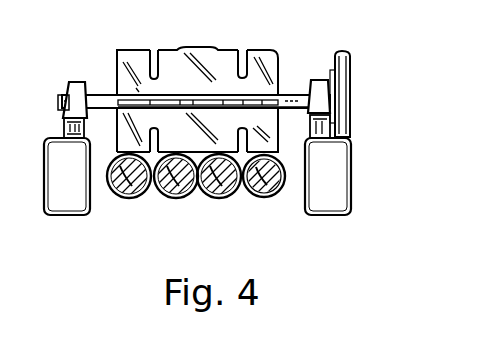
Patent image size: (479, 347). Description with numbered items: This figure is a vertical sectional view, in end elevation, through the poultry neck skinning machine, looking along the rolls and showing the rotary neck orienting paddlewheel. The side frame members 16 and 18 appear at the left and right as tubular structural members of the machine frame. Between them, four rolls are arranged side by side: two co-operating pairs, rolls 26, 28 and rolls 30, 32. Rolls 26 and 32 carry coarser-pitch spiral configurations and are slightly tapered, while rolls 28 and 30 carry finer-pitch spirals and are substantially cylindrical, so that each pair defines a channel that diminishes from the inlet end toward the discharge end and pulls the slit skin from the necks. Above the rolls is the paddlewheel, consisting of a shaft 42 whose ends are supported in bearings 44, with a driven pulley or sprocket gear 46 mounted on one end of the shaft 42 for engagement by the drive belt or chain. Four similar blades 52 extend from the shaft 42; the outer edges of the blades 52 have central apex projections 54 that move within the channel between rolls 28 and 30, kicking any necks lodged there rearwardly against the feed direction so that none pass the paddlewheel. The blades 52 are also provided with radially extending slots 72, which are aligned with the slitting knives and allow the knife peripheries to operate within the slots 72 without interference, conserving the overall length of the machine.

The side frame member 16 is at (82, 213).
The side frame member 18 is at (343, 190).
The roll 26 is at (133, 201).
The roll 28 is at (178, 201).
The roll 30 is at (224, 201).
The roll 32 is at (265, 200).
The shaft 42 is at (293, 96).
The bearings 44 is at (76, 82).
The driven pulley or sprocket gear 46 is at (348, 86).
The blades 52 is at (207, 65).
The central apex projections 54 is at (196, 47).
The radially extending slots 72 is at (160, 66).